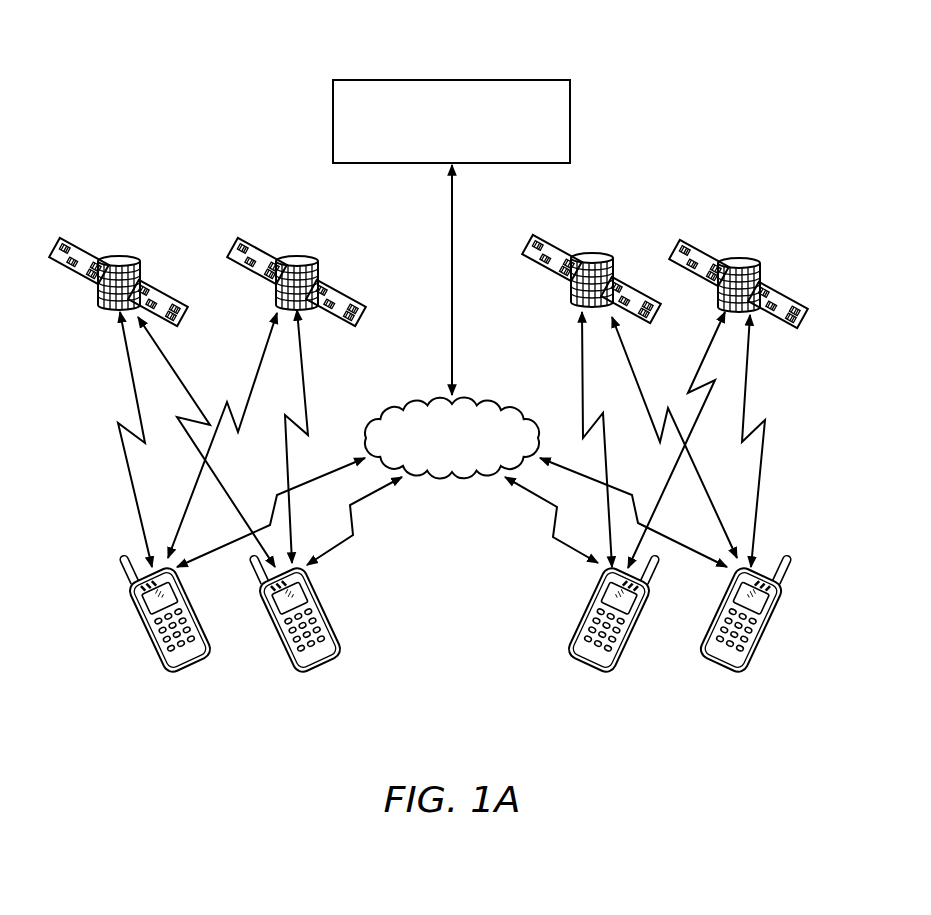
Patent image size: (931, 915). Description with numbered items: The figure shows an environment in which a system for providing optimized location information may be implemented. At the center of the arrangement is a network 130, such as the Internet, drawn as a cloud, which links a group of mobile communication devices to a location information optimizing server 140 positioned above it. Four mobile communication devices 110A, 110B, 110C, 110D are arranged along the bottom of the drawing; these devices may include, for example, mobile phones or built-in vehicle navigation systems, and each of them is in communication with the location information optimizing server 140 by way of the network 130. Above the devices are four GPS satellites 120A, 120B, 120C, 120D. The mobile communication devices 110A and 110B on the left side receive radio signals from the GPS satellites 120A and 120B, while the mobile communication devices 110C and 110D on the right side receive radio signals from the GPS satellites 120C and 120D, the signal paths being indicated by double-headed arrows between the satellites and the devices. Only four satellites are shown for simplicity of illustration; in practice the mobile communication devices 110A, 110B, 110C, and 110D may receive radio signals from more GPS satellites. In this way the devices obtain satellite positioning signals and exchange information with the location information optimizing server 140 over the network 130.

The location information optimizing server 140 is at (452, 80).
The network 130 is at (450, 481).
The GPS satellite 120A is at (120, 262).
The GPS satellite 120B is at (297, 264).
The GPS satellite 120C is at (594, 258).
The GPS satellite 120D is at (741, 265).
The mobile communication device 110A is at (180, 666).
The mobile communication device 110B is at (318, 665).
The mobile communication device 110C is at (585, 662).
The mobile communication device 110D is at (715, 662).